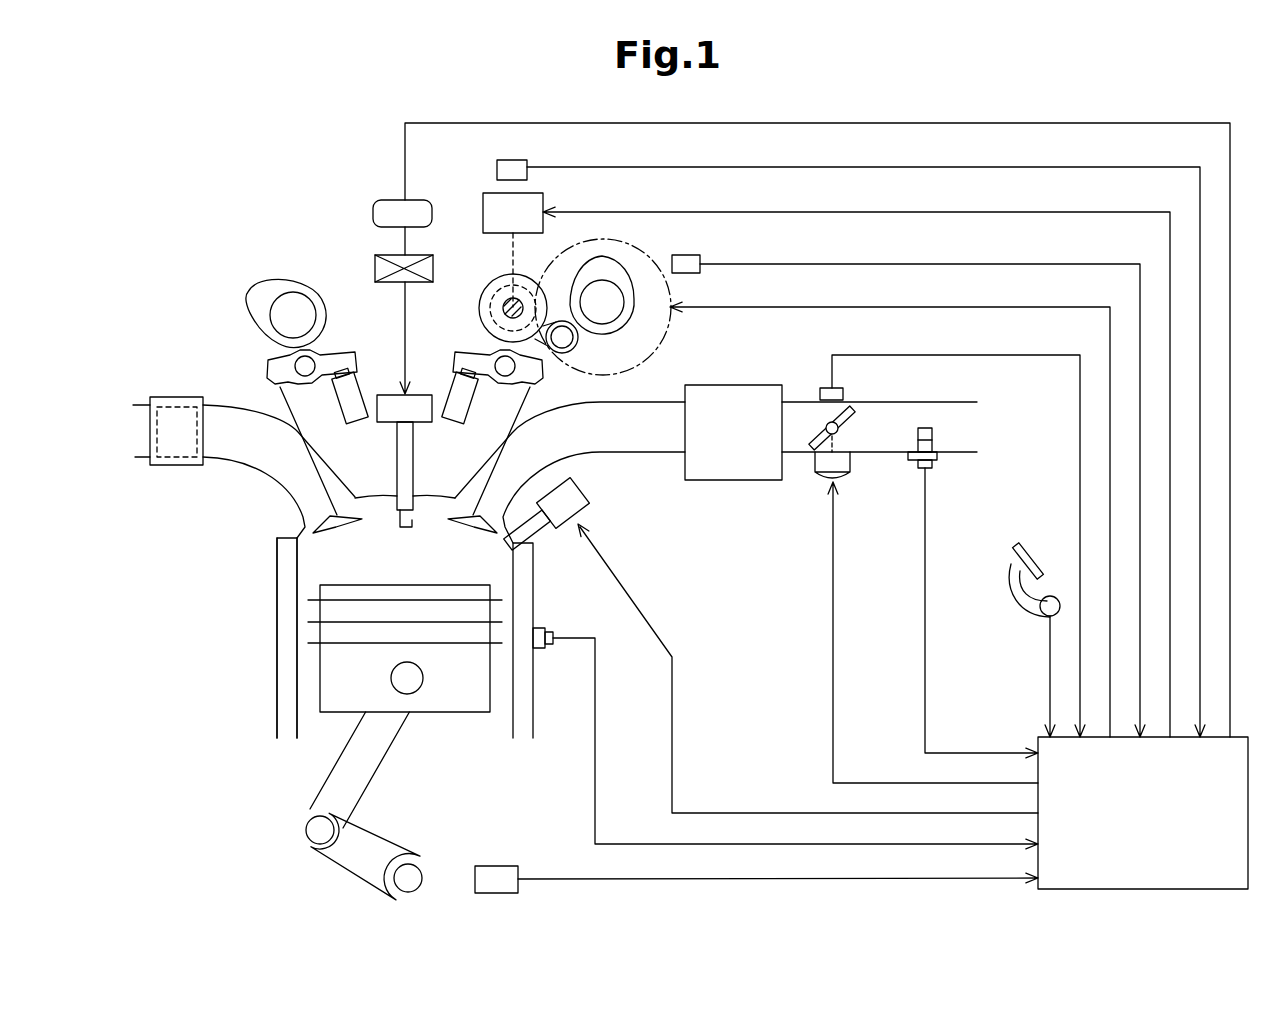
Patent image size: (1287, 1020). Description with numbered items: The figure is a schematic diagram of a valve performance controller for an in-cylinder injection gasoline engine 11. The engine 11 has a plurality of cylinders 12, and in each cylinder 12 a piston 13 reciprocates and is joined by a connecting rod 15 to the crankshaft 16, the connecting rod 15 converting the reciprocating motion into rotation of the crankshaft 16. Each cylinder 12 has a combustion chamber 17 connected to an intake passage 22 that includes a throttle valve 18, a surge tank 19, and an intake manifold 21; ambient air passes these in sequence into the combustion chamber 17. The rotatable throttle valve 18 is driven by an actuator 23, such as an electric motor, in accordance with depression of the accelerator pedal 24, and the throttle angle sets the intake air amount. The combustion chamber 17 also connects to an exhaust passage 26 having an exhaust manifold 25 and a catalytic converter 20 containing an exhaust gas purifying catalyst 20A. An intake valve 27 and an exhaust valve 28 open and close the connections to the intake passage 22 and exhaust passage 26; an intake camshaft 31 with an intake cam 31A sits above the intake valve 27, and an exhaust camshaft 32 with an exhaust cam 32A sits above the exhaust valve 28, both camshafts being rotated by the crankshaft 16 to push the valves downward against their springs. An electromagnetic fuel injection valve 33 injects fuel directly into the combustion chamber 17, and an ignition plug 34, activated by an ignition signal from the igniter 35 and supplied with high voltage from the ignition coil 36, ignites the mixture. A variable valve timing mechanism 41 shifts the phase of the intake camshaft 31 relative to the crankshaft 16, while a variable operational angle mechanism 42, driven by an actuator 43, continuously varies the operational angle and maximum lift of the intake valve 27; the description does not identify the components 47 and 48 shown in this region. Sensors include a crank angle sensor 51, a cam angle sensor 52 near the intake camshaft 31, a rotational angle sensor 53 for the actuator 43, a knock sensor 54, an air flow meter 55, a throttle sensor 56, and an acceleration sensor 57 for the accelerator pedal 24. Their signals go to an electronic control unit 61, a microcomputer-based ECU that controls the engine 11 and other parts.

The engine 11 is at (245, 227).
The cylinder 12 is at (300, 722).
The piston 13 is at (480, 702).
The connecting rod 15 is at (373, 762).
The crankshaft 16 is at (416, 863).
The combustion chamber 17 is at (310, 554).
The throttle valve 18 is at (848, 400).
The surge tank 19 is at (725, 481).
The catalytic converter 20 is at (178, 466).
The exhaust gas purifying catalyst 20A is at (168, 407).
The intake manifold 21 is at (640, 456).
The intake passage 22 is at (979, 453).
The actuator 23 is at (813, 462).
The accelerator pedal 24 is at (1010, 552).
The exhaust manifold 25 is at (257, 467).
The exhaust passage 26 is at (135, 458).
The intake valve 27 is at (470, 532).
The exhaust valve 28 is at (340, 532).
The intake camshaft 31 is at (618, 313).
The intake cam 31A is at (644, 262).
The exhaust camshaft 32 is at (277, 331).
The exhaust cam 32A is at (248, 300).
The fuel injection valve 33 is at (569, 528).
The ignition plug 34 is at (397, 456).
The igniter 35 is at (373, 214).
The ignition coil 36 is at (375, 268).
The variable valve timing mechanism 41 is at (668, 292).
The variable operational angle mechanism 42 is at (465, 183).
The actuator 43 is at (535, 195).
The roller follower 47 is at (580, 348).
The roller 48 is at (548, 352).
The crank angle sensor 51 is at (495, 866).
The cam angle sensor 52 is at (698, 256).
The rotational angle sensor 53 is at (525, 160).
The knock sensor 54 is at (550, 646).
The air flow meter 55 is at (912, 462).
The throttle sensor 56 is at (832, 388).
The acceleration sensor 57 is at (1055, 595).
The electronic control unit 61 is at (1035, 742).